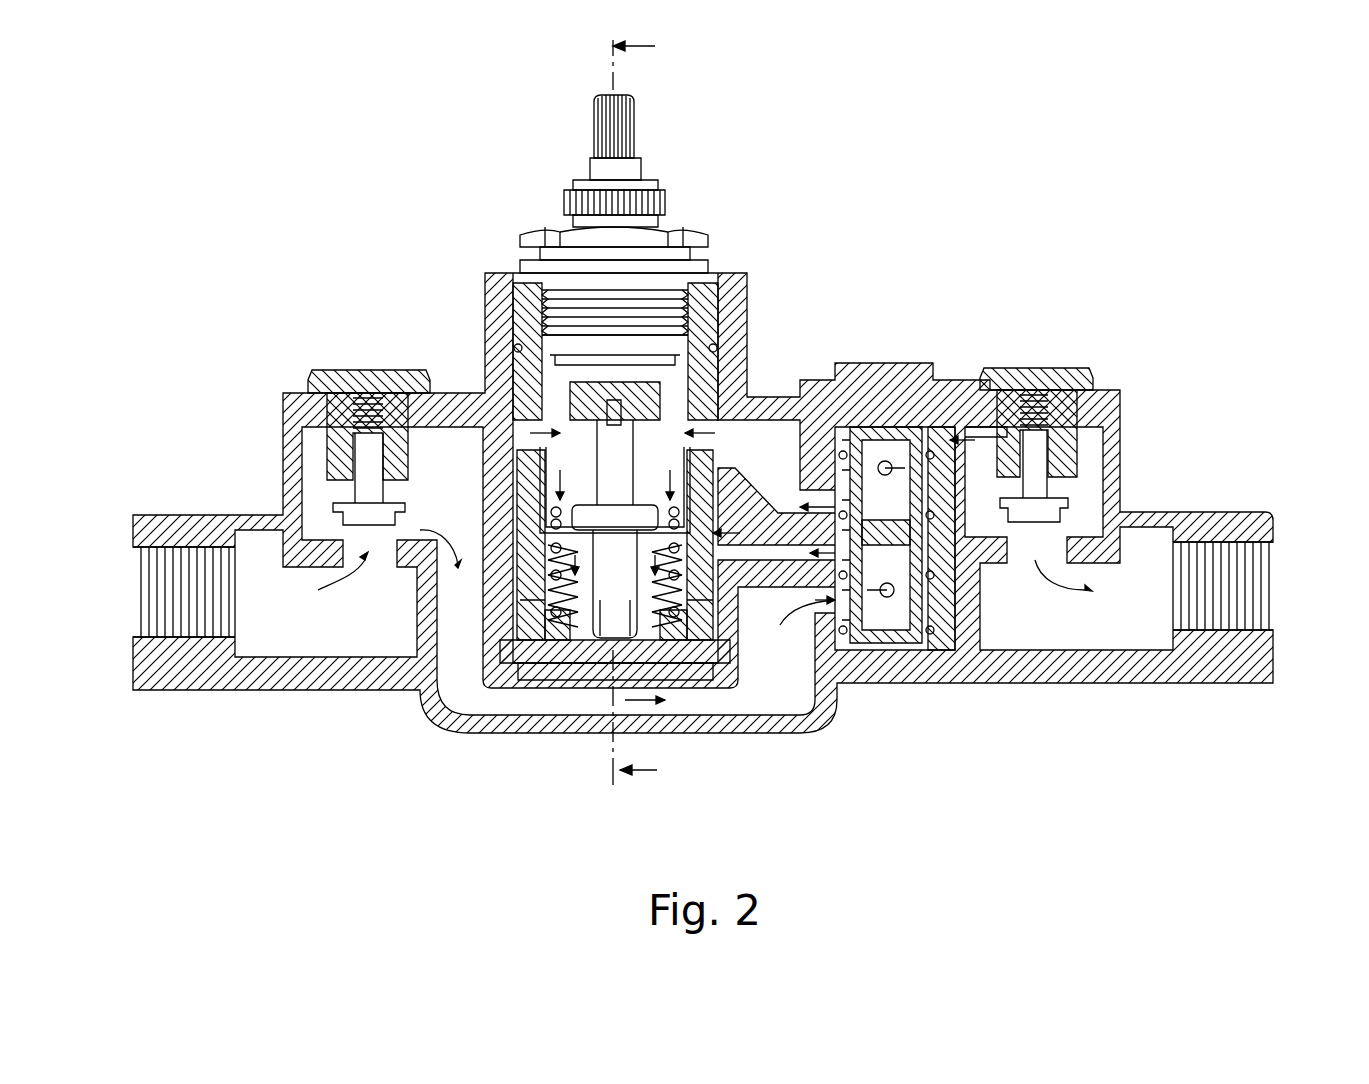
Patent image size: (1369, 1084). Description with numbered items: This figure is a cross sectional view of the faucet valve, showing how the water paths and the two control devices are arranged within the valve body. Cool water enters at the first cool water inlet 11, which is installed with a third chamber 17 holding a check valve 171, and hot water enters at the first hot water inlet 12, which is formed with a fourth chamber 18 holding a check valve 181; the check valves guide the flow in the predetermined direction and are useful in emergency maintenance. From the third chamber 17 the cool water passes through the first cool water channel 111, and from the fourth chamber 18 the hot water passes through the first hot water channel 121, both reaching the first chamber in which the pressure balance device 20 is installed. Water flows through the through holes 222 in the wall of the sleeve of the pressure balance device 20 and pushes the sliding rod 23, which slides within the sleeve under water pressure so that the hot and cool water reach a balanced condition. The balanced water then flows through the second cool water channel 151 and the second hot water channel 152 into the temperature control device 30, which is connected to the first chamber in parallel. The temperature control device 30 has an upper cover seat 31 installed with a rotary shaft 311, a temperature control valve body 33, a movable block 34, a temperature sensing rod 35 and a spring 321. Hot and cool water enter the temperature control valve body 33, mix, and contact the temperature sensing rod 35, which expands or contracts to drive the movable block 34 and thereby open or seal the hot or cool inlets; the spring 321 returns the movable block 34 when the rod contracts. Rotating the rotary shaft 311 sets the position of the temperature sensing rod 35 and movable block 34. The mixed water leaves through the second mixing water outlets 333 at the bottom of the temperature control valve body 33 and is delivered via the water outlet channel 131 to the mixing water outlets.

The first cool water inlet 11 is at (1250, 568).
The first hot water inlet 12 is at (148, 577).
The third chamber 17 is at (1097, 473).
The fourth chamber 18 is at (320, 490).
The pressure balance device 20 is at (855, 345).
The sliding rod 23 is at (915, 610).
The temperature control device 30 is at (672, 158).
The upper cover seat 31 is at (535, 230).
The temperature control valve body 33 is at (540, 485).
The movable block 34 is at (520, 470).
The temperature sensing rod 35 is at (605, 607).
The first cool water channel 111 is at (987, 420).
The first hot water channel 121 is at (717, 697).
The water outlet channel 131 is at (680, 668).
The second cool water channel 151 is at (762, 435).
The second hot water channel 152 is at (787, 553).
The check valve 171 is at (1082, 368).
The check valve 181 is at (338, 370).
The through holes 222 is at (926, 435).
The rotary shaft 311 is at (594, 128).
The spring 321 is at (530, 570).
The second mixing water outlets 333 is at (590, 648).